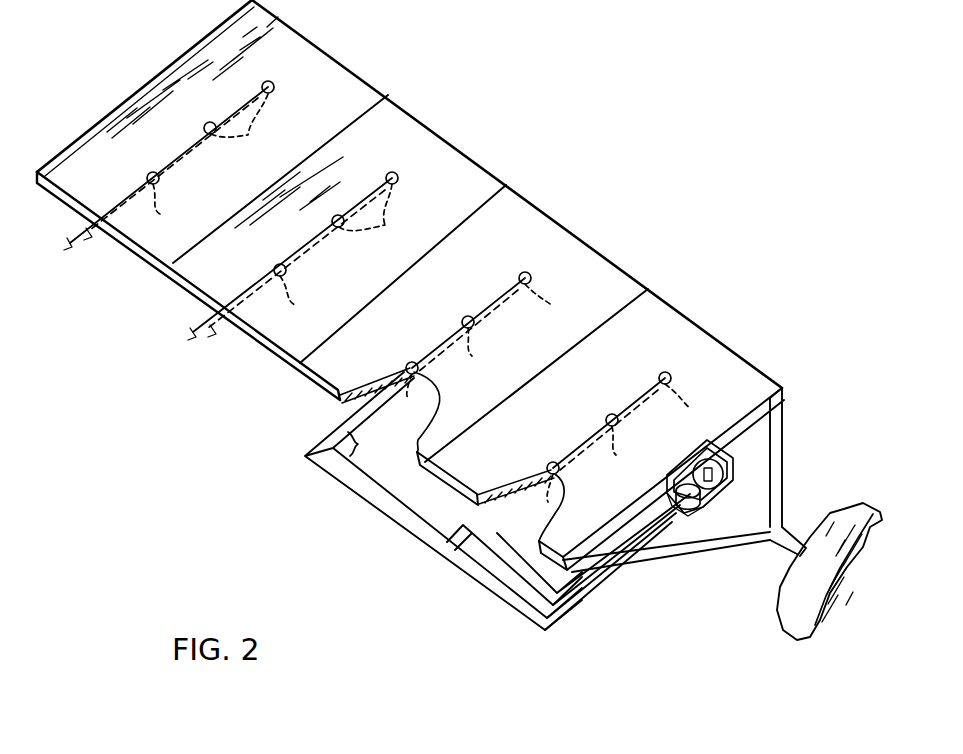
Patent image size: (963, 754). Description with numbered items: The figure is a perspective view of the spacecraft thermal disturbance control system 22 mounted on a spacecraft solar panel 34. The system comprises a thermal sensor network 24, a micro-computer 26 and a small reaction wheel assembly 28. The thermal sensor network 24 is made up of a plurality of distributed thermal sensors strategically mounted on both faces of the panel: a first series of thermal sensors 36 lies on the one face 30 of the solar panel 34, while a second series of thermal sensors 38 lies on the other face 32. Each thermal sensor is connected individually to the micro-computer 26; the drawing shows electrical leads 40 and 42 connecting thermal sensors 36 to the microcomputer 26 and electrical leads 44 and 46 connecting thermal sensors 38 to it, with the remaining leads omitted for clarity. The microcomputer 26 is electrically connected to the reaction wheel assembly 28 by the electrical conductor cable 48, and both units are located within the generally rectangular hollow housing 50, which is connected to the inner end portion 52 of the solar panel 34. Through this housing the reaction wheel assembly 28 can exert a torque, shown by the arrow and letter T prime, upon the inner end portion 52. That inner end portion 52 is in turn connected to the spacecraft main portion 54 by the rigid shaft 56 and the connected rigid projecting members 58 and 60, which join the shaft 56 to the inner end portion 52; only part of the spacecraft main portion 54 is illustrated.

The spacecraft thermal disturbance control system 22 is at (683, 364).
The thermal sensor network 24 is at (290, 87).
The micro-computer 26 is at (698, 508).
The reaction wheel assembly 28 is at (715, 482).
The face 30 is at (555, 238).
The face 32 is at (340, 399).
The spacecraft solar panel 34 is at (457, 145).
The first series of thermal sensors 36 is at (274, 91).
The second series of thermal sensors 38 is at (406, 311).
The electrical lead 40 is at (305, 456).
The electrical lead 42 is at (448, 535).
The electrical lead 44 is at (358, 444).
The electrical lead 46 is at (506, 545).
The electrical conductor cable 48 is at (700, 476).
The hollow housing 50 is at (772, 411).
The inner end portion 52 is at (745, 381).
The spacecraft main portion 54 is at (790, 627).
The rigid shaft 56 is at (778, 548).
The rigid projecting member 58 is at (715, 556).
The rigid projecting member 60 is at (784, 490).